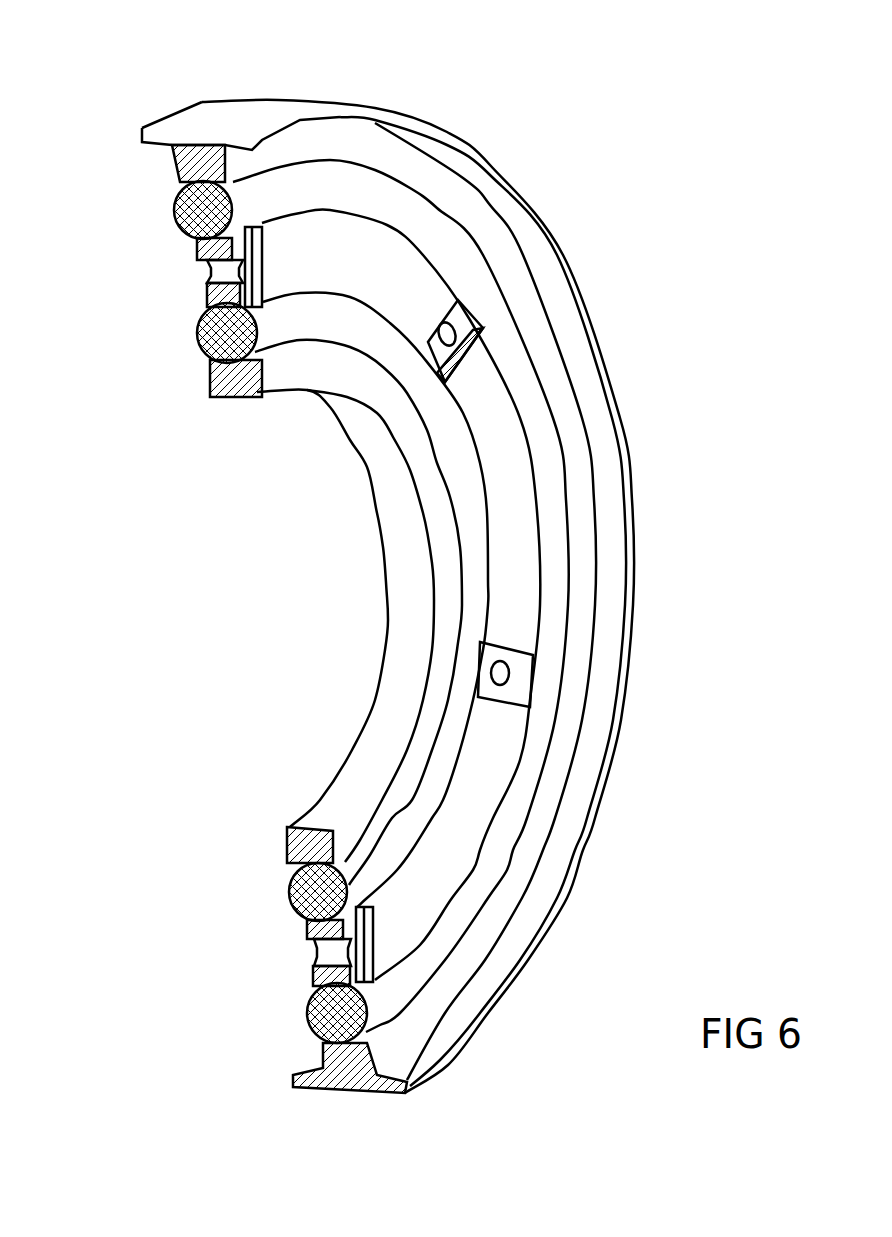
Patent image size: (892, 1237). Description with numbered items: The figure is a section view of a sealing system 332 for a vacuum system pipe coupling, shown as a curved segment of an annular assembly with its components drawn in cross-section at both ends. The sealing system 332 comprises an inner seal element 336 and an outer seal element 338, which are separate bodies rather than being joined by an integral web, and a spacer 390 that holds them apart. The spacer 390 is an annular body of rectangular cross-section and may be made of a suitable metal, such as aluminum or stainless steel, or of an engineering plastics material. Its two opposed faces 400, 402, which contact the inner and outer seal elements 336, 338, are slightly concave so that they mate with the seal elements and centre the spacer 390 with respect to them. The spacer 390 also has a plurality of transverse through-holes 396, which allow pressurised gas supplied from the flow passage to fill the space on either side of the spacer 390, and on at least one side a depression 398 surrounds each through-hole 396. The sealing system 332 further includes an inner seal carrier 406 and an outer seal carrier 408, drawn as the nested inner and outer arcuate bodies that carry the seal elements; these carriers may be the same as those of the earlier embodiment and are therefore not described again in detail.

The sealing system 332 is at (638, 155).
The inner seal element 336 is at (202, 362).
The outer seal element 338 is at (176, 206).
The spacer 390 is at (207, 287).
The transverse through-holes 396 is at (472, 322).
The depression 398 is at (518, 664).
The opposed face 400 is at (307, 927).
The opposed face 402 is at (307, 1003).
The inner seal carrier 406 is at (400, 537).
The outer seal carrier 408 is at (400, 113).